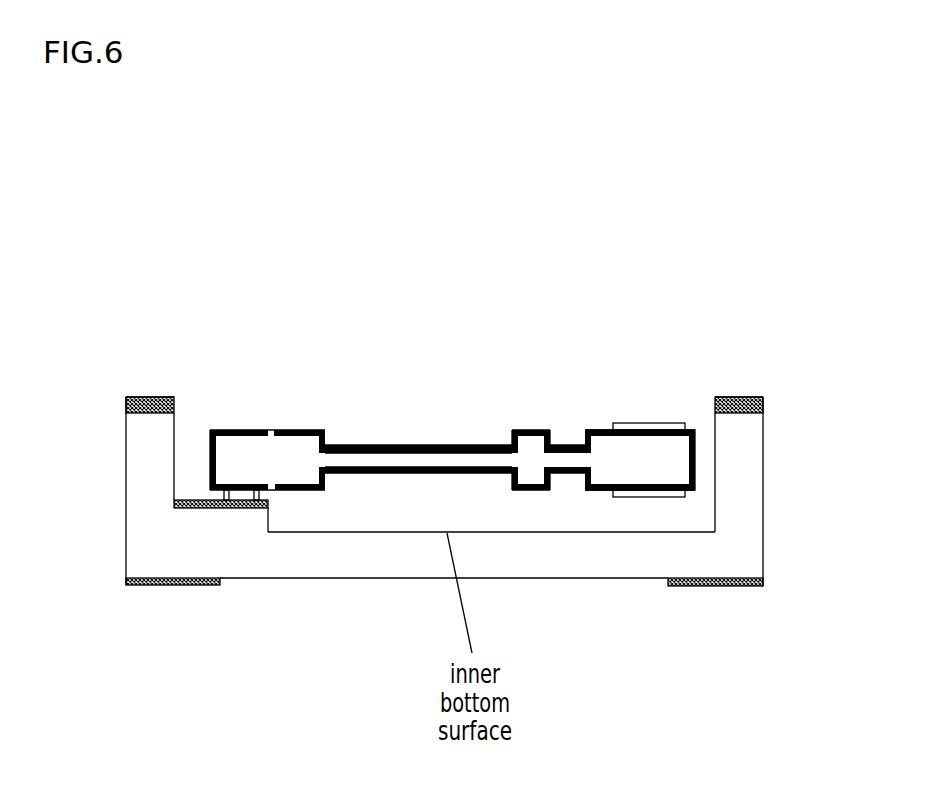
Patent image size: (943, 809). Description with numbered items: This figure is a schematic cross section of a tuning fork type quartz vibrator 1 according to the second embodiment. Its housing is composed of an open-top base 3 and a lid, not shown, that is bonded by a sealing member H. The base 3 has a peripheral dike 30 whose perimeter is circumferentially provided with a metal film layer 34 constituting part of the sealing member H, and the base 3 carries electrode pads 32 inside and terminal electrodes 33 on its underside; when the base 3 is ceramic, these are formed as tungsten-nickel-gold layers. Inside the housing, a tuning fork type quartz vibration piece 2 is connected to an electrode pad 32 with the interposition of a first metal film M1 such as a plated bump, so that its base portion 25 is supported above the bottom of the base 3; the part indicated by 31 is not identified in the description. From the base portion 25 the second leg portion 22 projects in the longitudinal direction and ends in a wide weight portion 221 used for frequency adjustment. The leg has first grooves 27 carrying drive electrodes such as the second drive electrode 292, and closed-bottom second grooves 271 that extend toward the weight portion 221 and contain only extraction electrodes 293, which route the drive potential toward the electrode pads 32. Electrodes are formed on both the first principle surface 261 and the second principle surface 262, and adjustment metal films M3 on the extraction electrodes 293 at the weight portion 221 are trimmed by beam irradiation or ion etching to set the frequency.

The tuning fork type quartz vibrator 1 is at (119, 240).
The tuning fork type quartz vibration piece 2 is at (295, 470).
The base 3 is at (408, 562).
The second leg portion 22 is at (642, 450).
The weight portion 221 is at (583, 475).
The base portion 25 is at (267, 455).
The first principle surface 261 is at (692, 491).
The second principle surface 262 is at (690, 432).
The grooves 27 is at (428, 445).
The second grooves 271 is at (570, 445).
The second drive electrode 292 is at (352, 465).
The extraction electrode 293 is at (537, 430).
The dike 30 is at (143, 470).
The inner bottom surface 31 is at (257, 527).
The electrode pad 32 is at (197, 508).
The terminal electrode 33 is at (137, 585).
The metal film layer 34 is at (150, 395).
The sealing member H is at (127, 401).
The first metal film M1 is at (238, 495).
The adjustment metal film M3 is at (618, 424).